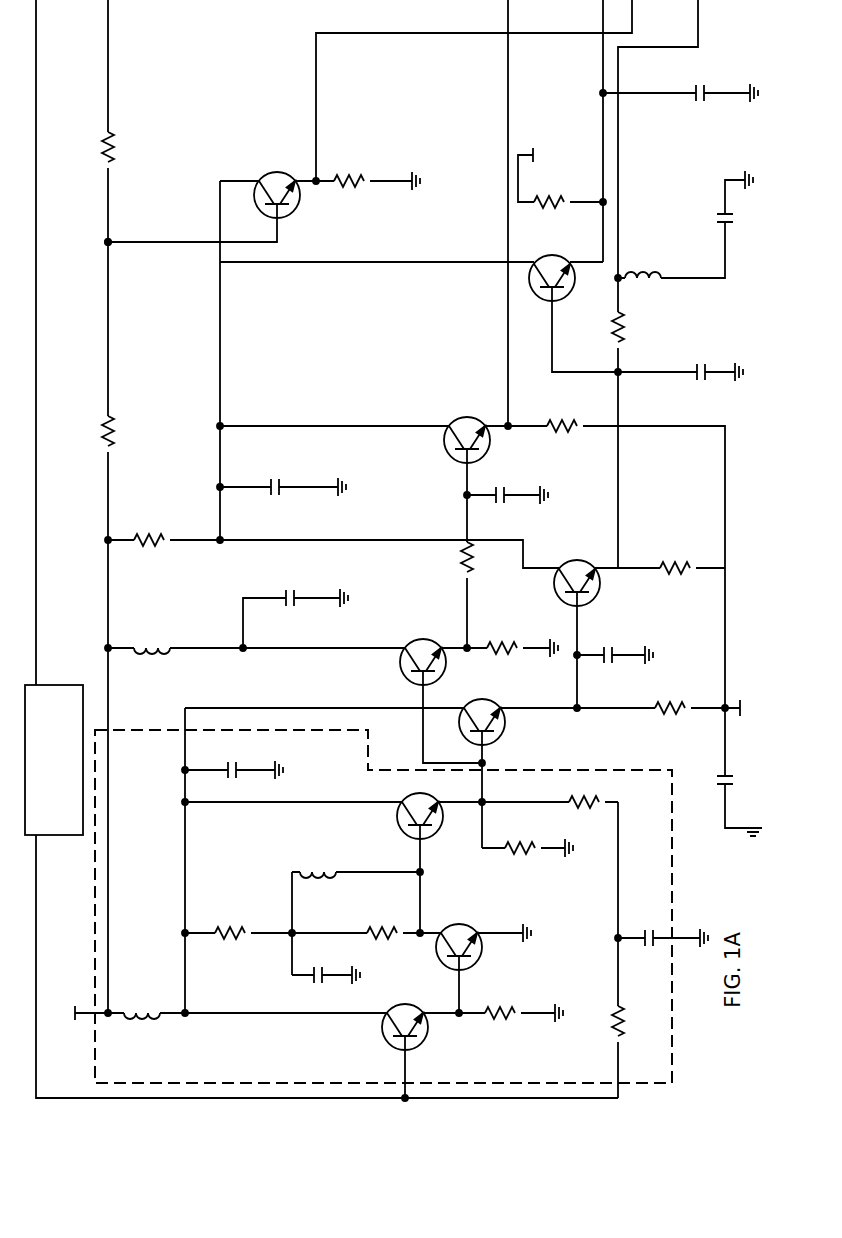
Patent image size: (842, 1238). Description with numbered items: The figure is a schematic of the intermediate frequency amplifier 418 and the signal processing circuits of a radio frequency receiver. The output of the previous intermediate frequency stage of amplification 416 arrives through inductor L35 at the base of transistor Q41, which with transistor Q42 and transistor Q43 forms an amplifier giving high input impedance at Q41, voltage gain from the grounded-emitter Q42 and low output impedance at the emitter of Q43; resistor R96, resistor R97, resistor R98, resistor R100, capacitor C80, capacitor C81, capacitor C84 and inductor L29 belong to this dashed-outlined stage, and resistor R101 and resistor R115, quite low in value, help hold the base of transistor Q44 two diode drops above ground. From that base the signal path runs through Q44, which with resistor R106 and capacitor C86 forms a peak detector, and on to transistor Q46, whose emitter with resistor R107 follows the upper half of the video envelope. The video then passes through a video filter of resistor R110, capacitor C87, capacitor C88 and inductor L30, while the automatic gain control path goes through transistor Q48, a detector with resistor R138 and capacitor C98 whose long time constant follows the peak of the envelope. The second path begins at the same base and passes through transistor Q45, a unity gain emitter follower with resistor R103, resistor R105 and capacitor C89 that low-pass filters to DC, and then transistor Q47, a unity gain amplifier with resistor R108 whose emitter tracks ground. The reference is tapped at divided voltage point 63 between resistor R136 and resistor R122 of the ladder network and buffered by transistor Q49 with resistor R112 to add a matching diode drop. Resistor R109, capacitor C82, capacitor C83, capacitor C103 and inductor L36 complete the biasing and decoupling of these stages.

The divided voltage point 63 is at (108, 242).
The previous intermediate frequency stage of amplification 416 is at (62, 685).
The intermediate frequency amplifier 418 is at (92, 872).
The transistor Q41 is at (409, 1005).
The transistor Q42 is at (450, 925).
The transistor Q43 is at (401, 828).
The transistor Q44 is at (500, 742).
The transistor Q45 is at (412, 640).
The transistor Q46 is at (572, 560).
The transistor Q47 is at (451, 456).
The transistor Q48 is at (537, 300).
The transistor Q49 is at (266, 172).
The resistor R96 is at (511, 1013).
The resistor R97 is at (238, 936).
The resistor R98 is at (366, 936).
The resistor R100 is at (527, 846).
The resistor R101 is at (550, 803).
The resistor R103 is at (512, 651).
The resistor R105 is at (461, 595).
The resistor R106 is at (631, 710).
The resistor R107 is at (671, 569).
The resistor R108 is at (616, 584).
The resistor R109 is at (333, 540).
The resistor R110 is at (614, 330).
The resistor R112 is at (368, 184).
The resistor R115 is at (602, 1025).
The resistor R122 is at (104, 434).
The resistor R136 is at (104, 150).
The resistor R138 is at (560, 185).
The capacitor C80 is at (326, 977).
The capacitor C81 is at (234, 771).
The capacitor C82 is at (295, 604).
The capacitor C83 is at (724, 792).
The capacitor C84 is at (663, 940).
The capacitor C86 is at (615, 658).
The capacitor C87 is at (680, 374).
The capacitor C88 is at (722, 203).
The capacitor C89 is at (507, 498).
The capacitor C98 is at (680, 95).
The capacitor C103 is at (283, 488).
The inductor L29 is at (356, 909).
The inductor L30 is at (671, 265).
The inductor L35 is at (121, 1015).
The inductor L36 is at (256, 652).